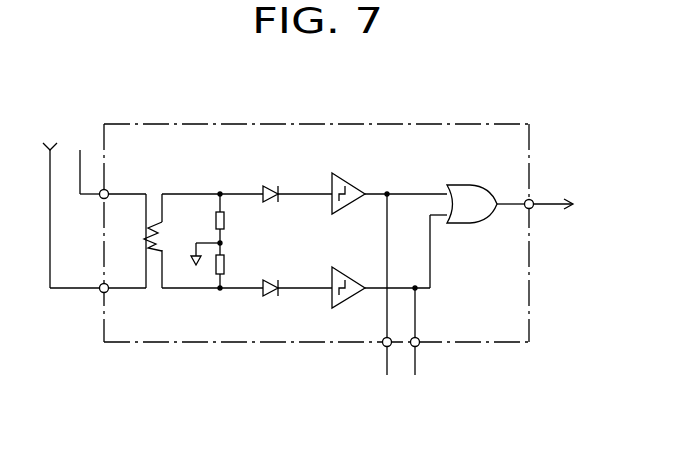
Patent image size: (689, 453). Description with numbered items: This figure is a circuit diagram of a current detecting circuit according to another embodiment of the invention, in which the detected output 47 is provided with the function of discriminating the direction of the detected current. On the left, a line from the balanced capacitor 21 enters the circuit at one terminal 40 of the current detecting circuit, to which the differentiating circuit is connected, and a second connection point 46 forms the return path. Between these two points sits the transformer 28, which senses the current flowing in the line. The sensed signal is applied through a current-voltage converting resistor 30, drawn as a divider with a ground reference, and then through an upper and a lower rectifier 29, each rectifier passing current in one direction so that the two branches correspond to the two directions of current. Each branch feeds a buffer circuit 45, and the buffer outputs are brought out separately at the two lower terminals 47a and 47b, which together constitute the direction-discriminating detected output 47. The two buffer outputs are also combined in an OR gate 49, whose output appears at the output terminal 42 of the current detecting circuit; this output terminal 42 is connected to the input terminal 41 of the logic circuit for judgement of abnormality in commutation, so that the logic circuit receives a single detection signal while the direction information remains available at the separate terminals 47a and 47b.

The balanced capacitor 21 is at (68, 205).
The transformer 28 is at (145, 222).
The rectifier 29 is at (270, 186).
The current-voltage converting resistor 30 is at (224, 220).
The terminal of the current detecting circuit 40 is at (101, 198).
The input terminal of the logic circuit 41 is at (571, 205).
The output terminal of the current detecting circuit 42 is at (538, 198).
The buffer circuit 45 is at (352, 180).
The terminal 46 is at (102, 296).
The detected output 47 is at (238, 382).
The terminal 47a is at (383, 346).
The terminal 47b is at (419, 346).
The OR gate 49 is at (466, 225).